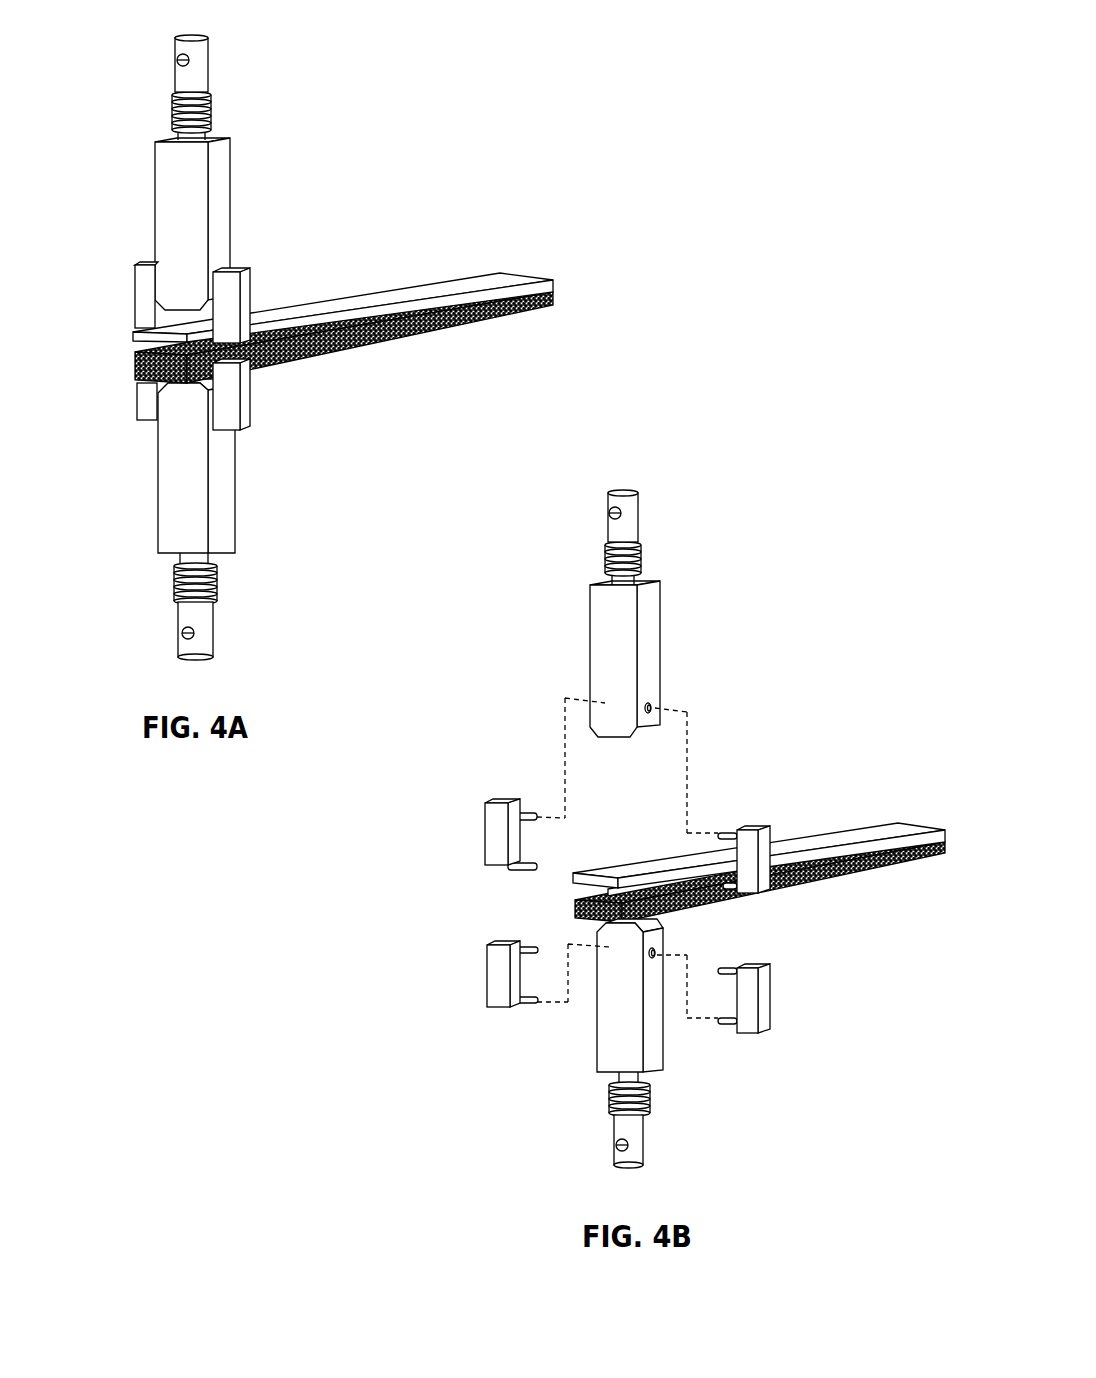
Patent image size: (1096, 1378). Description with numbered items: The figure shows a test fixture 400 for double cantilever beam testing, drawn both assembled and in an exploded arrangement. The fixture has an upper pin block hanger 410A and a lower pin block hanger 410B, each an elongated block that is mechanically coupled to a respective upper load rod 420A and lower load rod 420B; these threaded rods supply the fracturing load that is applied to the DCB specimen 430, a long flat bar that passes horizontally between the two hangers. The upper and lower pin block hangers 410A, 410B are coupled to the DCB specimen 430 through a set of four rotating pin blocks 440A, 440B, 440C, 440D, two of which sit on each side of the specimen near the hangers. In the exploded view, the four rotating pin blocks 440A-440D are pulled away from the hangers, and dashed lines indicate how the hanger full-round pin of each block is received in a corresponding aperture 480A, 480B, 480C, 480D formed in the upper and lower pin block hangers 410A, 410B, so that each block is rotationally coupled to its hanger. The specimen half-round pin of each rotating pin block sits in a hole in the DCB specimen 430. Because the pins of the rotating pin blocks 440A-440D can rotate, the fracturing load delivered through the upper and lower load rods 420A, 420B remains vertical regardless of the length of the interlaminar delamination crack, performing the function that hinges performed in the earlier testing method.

In FIG. 4A, the test fixture 400 is at (275, 45).
In FIG. 4B, the test fixture 400 is at (787, 483).
In FIG. 4A, the upper pin block hanger 410A is at (155, 158).
In FIG. 4B, the upper pin block hanger 410A is at (590, 598).
In FIG. 4A, the lower pin block hanger 410B is at (158, 480).
In FIG. 4B, the lower pin block hanger 410B is at (597, 1045).
In FIG. 4A, the upper load rod 420A is at (210, 66).
In FIG. 4B, the upper load rod 420A is at (638, 522).
In FIG. 4A, the lower load rod 420B is at (215, 620).
In FIG. 4B, the lower load rod 420B is at (645, 1128).
In FIG. 4A, the DCB specimen 430 is at (483, 315).
In FIG. 4B, the DCB specimen 430 is at (908, 860).
In FIG. 4A, the rotating pin block 440A is at (135, 296).
In FIG. 4B, the rotating pin block 440A is at (485, 845).
In FIG. 4A, the rotating pin block 440B is at (250, 283).
In FIG. 4B, the rotating pin block 440B is at (770, 835).
In FIG. 4A, the rotating pin block 440C is at (138, 397).
In FIG. 4B, the rotating pin block 440C is at (487, 982).
In FIG. 4A, the rotating pin block 440D is at (250, 406).
In FIG. 4B, the rotating pin block 440D is at (770, 992).
In FIG. 4B, the aperture 480A is at (595, 703).
In FIG. 4B, the aperture 480B is at (655, 708).
In FIG. 4B, the aperture 480C is at (597, 945).
In FIG. 4B, the aperture 480D is at (660, 953).